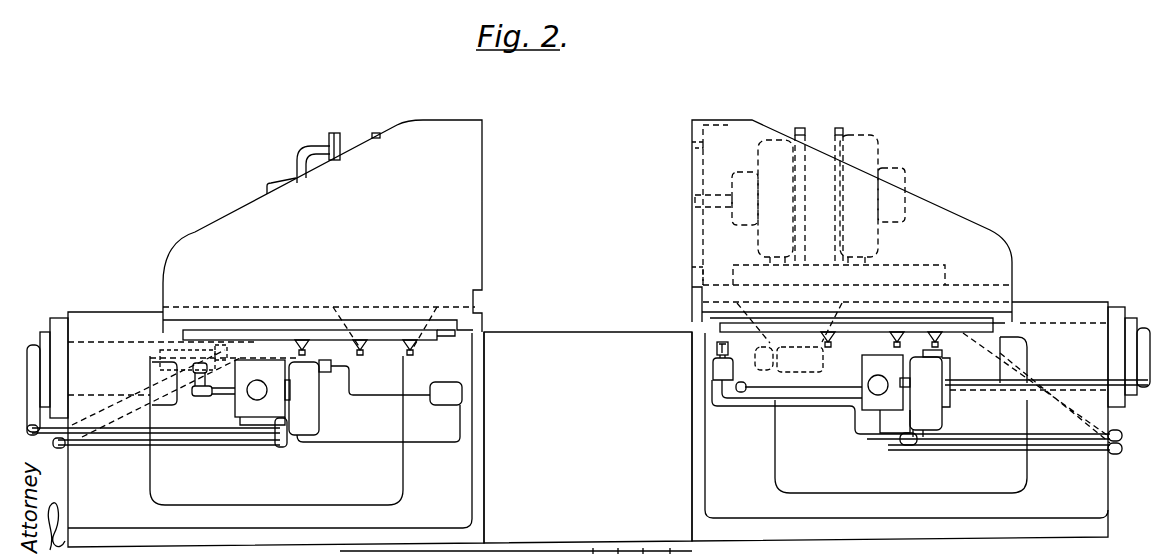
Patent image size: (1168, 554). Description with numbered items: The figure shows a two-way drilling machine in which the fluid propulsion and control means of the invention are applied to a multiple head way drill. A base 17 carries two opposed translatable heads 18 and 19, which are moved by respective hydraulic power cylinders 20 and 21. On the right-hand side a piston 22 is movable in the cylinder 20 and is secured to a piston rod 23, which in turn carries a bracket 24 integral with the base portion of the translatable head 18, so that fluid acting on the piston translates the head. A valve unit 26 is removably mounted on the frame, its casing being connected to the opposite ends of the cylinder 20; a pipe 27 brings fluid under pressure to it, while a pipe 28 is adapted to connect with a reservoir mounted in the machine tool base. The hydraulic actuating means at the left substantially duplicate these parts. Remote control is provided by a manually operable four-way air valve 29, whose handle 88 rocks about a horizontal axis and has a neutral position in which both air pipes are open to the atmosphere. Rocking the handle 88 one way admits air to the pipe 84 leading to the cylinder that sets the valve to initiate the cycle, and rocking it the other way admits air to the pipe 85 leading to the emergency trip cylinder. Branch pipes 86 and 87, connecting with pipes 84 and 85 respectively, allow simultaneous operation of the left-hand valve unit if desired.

The base 17 is at (588, 437).
The translatable head 18 is at (852, 221).
The translatable head 19 is at (322, 226).
The hydraulic power cylinder 20 is at (1057, 320).
The hydraulic power cylinder 21 is at (122, 332).
The piston 22 is at (1018, 320).
The piston rod 23 is at (881, 328).
The bracket 24 is at (763, 353).
The valve unit 26 is at (933, 417).
The pipe 27 is at (1063, 450).
The pipe 28 is at (825, 388).
The four way air valve 29 is at (718, 370).
The pipe 84 is at (753, 407).
The pipe 85 is at (790, 399).
The branch pipe 86 is at (437, 443).
The branch pipe 87 is at (419, 396).
The handle 88 is at (713, 348).